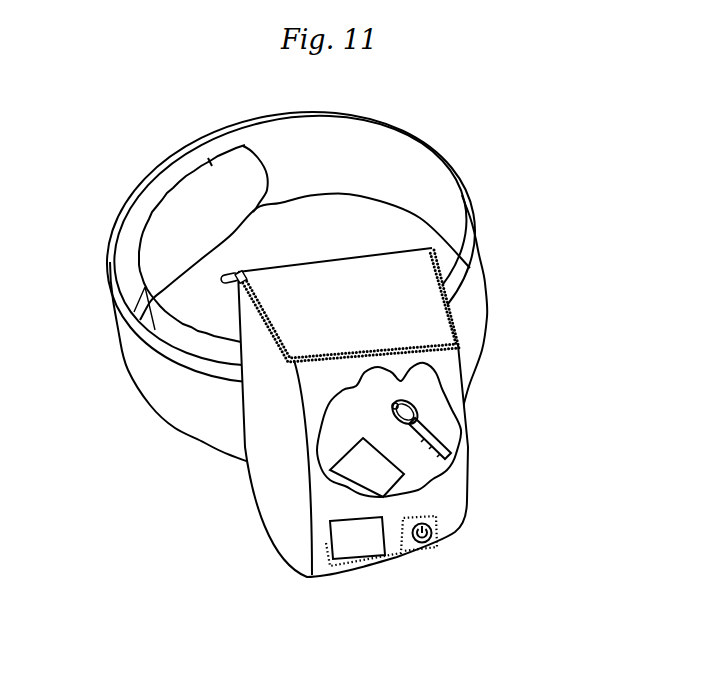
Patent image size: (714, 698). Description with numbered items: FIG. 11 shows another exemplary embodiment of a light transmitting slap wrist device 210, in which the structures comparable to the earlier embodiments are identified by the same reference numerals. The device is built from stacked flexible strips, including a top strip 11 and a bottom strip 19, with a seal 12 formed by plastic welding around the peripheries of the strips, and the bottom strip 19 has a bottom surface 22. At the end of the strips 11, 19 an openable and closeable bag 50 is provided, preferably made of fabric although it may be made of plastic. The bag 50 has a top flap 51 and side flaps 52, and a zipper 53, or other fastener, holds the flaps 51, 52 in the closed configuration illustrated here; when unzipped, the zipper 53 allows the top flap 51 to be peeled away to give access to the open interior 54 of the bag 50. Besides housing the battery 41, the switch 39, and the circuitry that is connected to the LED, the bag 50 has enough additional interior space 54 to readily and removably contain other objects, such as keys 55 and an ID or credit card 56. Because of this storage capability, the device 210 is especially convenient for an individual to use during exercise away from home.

The slap wrist device 210 is at (345, 354).
The top strip 11 is at (528, 266).
The seal 12 is at (336, 267).
The bottom strip 19 is at (302, 243).
The bottom surface 22 is at (408, 120).
The bag 50 is at (333, 436).
The top flap 51 is at (327, 268).
The side flaps 52 is at (203, 457).
The zipper 53 is at (245, 340).
The open interior 54 is at (461, 430).
The keys 55 is at (487, 427).
The ID or credit card 56 is at (285, 519).
The battery 41 is at (381, 580).
The switch 39 is at (488, 545).